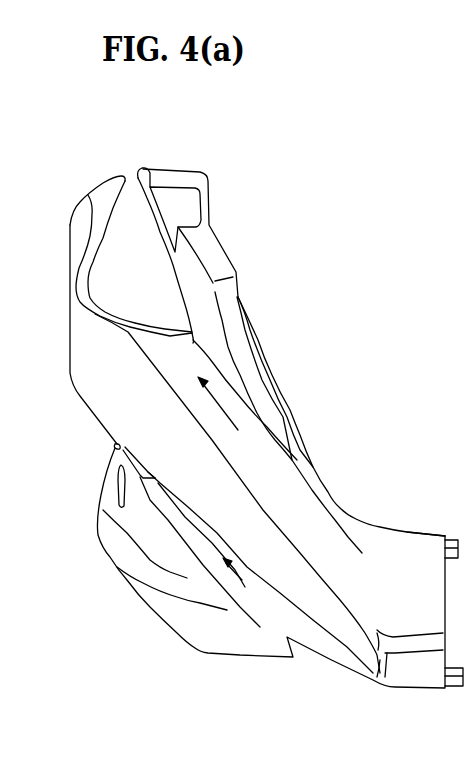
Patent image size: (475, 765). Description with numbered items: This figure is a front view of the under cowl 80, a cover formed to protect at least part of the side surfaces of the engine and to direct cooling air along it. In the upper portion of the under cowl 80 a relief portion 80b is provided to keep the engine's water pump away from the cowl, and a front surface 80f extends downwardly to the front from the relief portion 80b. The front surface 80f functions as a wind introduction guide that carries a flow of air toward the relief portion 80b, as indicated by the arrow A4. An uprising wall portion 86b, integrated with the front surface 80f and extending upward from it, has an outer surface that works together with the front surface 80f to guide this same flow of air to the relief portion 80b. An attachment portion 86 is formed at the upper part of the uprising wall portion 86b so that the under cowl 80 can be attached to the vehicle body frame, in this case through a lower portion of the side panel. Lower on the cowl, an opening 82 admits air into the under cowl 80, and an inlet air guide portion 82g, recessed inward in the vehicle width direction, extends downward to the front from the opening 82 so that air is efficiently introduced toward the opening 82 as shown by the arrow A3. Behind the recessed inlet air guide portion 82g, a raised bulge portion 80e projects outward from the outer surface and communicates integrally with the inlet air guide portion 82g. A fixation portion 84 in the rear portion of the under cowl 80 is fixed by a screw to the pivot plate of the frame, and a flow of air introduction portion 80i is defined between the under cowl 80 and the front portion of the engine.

The under cowl 80 is at (397, 250).
The relief portion 80b is at (125, 258).
The bulge portion 80e is at (113, 538).
The front surface 80f is at (270, 455).
The flow of air introduction portion 80i is at (398, 478).
The opening 82 is at (142, 463).
The inlet air guide portion 82g is at (205, 540).
The fixation portion 84 is at (120, 493).
The attachment portion 86 is at (212, 217).
The uprising wall portion 86b is at (228, 292).
The arrow A3 is at (235, 565).
The arrow A4 is at (218, 402).